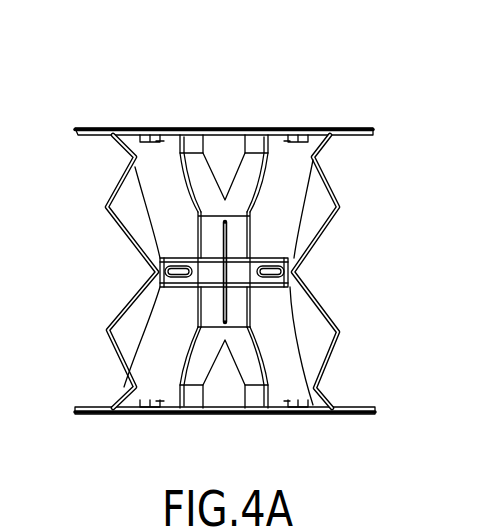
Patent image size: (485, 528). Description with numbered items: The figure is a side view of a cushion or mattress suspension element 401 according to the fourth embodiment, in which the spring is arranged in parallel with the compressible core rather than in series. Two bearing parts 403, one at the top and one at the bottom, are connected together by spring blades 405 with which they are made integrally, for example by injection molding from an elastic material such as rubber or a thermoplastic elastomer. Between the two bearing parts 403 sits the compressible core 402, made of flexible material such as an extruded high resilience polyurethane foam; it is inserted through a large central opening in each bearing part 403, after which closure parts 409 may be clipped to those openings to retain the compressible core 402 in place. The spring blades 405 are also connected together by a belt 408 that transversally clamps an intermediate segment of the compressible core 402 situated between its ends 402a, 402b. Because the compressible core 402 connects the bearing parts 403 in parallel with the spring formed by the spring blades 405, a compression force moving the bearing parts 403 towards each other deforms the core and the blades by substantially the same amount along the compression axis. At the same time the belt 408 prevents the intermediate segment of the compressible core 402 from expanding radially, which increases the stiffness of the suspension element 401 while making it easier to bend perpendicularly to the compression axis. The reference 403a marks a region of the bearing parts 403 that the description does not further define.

The cushion or mattress suspension element 401 is at (82, 78).
The compressible core 402 is at (163, 330).
The end of the compressible core 402a is at (157, 160).
The end of the compressible core 402b is at (150, 388).
The bearing part 403 is at (374, 131).
The plate end portion 403a is at (320, 118).
The spring blade 405 is at (323, 305).
The belt 408 is at (270, 257).
The closure part 409 is at (285, 126).